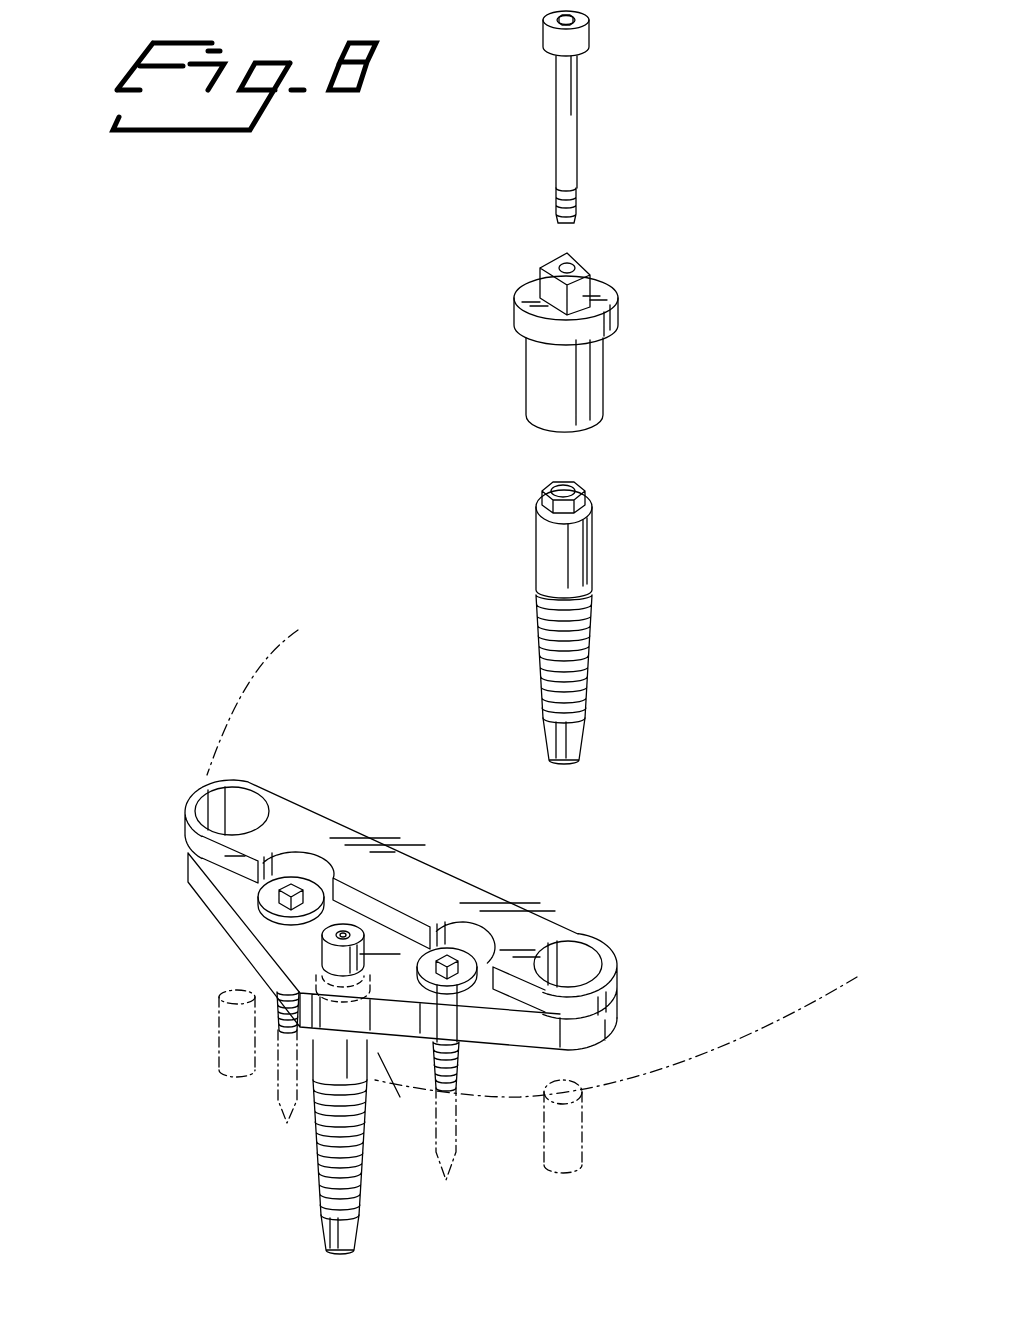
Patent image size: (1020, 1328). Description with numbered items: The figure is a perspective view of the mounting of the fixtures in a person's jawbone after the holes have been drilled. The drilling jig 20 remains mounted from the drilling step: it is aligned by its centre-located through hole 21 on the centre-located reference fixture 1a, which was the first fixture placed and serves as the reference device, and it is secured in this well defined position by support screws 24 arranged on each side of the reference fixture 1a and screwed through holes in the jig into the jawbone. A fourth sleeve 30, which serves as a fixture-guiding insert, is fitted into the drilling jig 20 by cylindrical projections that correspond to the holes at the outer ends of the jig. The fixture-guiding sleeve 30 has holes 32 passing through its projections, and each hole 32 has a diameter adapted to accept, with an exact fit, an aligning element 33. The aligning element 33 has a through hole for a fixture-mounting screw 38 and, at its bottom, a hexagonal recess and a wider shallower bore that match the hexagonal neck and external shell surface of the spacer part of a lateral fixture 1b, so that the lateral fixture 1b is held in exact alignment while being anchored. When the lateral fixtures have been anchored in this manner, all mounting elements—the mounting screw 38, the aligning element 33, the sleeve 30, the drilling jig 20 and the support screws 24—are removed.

The fixture-mounting screw 38 is at (577, 117).
The aligning element 33 is at (637, 308).
The lateral fixture 1b is at (590, 582).
The fixture-guiding sleeve 30 is at (305, 828).
The hole of the fixture-guiding sleeve 32 is at (595, 962).
The drilling jig 20 is at (235, 888).
The support screw 24 is at (277, 970).
The centre-located reference fixture 1a is at (323, 1147).
The centre-located through hole 21 is at (365, 1073).